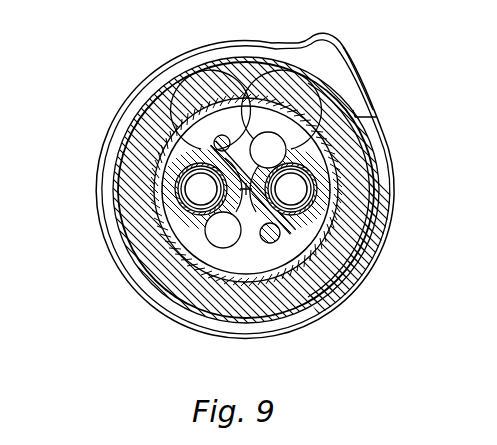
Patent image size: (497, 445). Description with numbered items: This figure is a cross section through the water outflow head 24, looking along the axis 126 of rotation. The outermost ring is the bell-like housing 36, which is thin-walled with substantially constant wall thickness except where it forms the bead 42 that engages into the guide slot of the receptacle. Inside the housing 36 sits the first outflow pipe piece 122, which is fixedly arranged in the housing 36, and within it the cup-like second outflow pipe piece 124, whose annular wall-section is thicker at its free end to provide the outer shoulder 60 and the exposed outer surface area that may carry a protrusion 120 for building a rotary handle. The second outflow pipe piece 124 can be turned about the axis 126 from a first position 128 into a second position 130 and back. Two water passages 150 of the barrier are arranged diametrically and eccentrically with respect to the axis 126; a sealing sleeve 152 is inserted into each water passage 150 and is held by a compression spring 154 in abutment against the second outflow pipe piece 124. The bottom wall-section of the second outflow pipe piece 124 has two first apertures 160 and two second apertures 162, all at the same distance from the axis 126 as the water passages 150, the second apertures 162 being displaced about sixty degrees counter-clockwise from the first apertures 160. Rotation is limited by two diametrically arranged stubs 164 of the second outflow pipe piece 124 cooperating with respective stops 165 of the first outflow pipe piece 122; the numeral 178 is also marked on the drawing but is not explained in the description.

The water outflow head 24 is at (90, 216).
The housing 36 is at (173, 87).
The bead 42 is at (397, 162).
The outer shoulder 60 is at (297, 320).
The protrusion 120 is at (340, 55).
The first outflow pipe piece 122 is at (203, 77).
The second outflow pipe piece 124 is at (320, 300).
The axis 126 is at (183, 232).
The first position 128 is at (347, 68).
The second position 130 is at (367, 7).
The water passage 150 is at (205, 194).
The sealing sleeve 152 is at (335, 228).
The compression spring 154 is at (350, 262).
The first aperture 160 is at (305, 193).
The second aperture 162 is at (222, 236).
The stub 164 is at (207, 143).
The stop 165 is at (210, 158).
The rib portion 178 is at (429, 15).